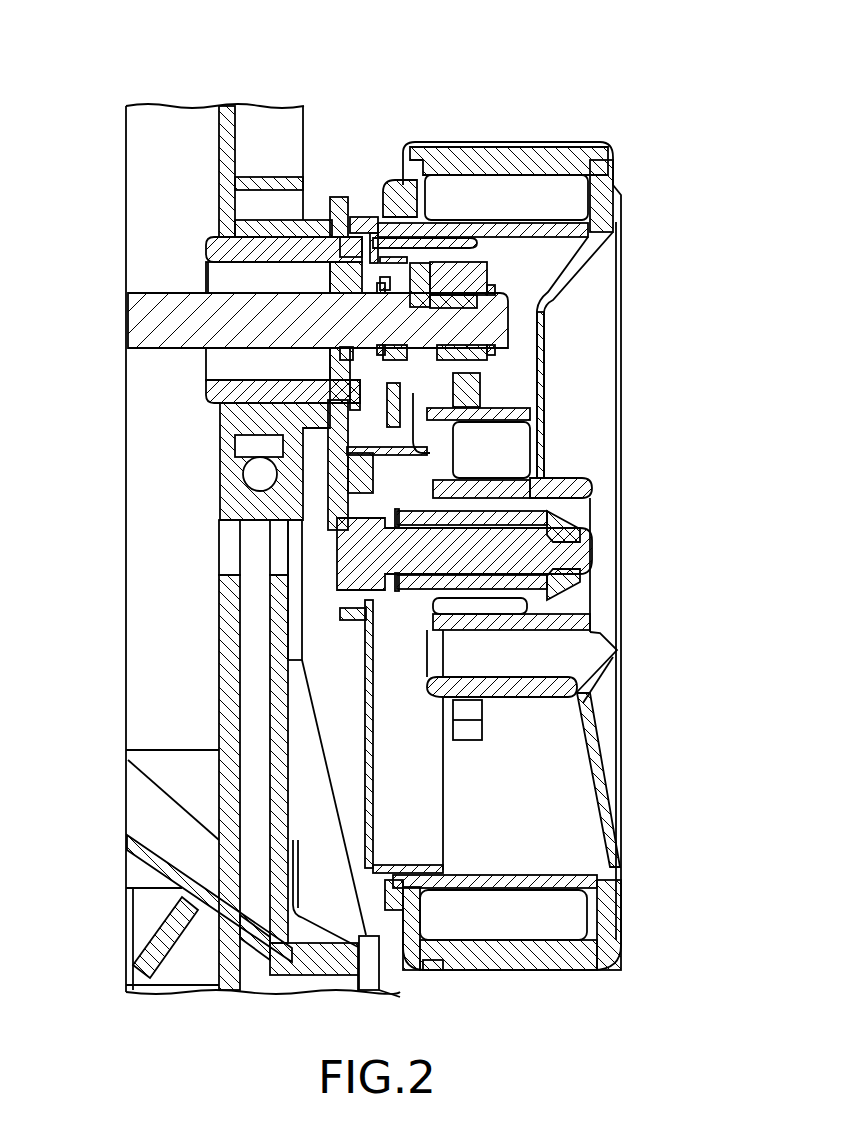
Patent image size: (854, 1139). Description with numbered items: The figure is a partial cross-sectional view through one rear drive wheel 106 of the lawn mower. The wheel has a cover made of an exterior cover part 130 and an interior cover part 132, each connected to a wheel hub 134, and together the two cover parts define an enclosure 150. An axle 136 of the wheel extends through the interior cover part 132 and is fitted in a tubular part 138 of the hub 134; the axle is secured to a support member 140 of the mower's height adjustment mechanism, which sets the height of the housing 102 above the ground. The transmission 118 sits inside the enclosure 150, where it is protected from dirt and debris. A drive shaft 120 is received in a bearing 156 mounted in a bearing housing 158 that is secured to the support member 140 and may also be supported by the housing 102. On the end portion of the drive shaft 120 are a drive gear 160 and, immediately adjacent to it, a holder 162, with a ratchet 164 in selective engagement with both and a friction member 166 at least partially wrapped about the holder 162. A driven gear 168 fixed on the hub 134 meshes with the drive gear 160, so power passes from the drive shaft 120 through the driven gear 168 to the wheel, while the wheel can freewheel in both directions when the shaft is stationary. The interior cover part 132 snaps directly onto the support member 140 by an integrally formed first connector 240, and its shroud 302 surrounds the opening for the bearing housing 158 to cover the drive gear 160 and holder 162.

The housing 102 is at (203, 175).
The transmission 118 is at (366, 103).
The bearing 156 is at (350, 272).
The shroud 302 is at (432, 238).
The drive gear 160 is at (467, 265).
The holder 162 is at (398, 280).
The enclosure 150 is at (528, 258).
The bearing housing 158 is at (222, 248).
The drive shaft 120 is at (152, 350).
The ratchet 164 is at (450, 304).
The friction member 166 is at (392, 428).
The support member 140 is at (345, 482).
The axle 136 is at (340, 563).
The first connector 240 is at (348, 619).
The tubular part 138 is at (417, 603).
The exterior cover part 130 is at (640, 748).
The wheel hub 134 is at (505, 698).
The driven gear 168 is at (468, 740).
The interior cover part 132 is at (380, 827).
The rear drive wheel 106 is at (513, 970).